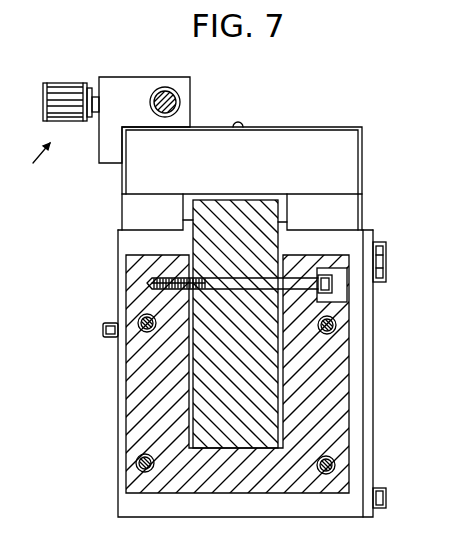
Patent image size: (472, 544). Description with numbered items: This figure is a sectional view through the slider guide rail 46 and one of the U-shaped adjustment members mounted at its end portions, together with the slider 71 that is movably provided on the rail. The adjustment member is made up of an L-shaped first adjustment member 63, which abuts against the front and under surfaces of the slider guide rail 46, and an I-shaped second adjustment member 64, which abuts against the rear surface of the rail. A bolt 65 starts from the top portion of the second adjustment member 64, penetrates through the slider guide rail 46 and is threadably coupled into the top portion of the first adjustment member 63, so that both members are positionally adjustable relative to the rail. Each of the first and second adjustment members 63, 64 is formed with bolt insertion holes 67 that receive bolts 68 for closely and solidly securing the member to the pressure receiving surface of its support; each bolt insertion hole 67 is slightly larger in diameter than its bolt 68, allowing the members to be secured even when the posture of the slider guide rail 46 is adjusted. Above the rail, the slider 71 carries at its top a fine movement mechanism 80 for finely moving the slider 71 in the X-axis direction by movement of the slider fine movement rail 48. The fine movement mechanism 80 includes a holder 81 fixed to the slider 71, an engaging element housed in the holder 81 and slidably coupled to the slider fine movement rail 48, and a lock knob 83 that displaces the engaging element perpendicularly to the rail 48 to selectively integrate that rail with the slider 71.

The slider guide rail 46 is at (267, 235).
The slider fine movement rail 48 is at (163, 92).
The first adjustment member 63 is at (137, 395).
The second adjustment member 64 is at (337, 404).
The bolt 65 is at (300, 280).
The bolt insertion hole 67 is at (142, 316).
The bolt 68 is at (143, 333).
The slider 71 is at (349, 167).
The fine movement mechanism 80 is at (32, 168).
The holder 81 is at (112, 85).
The lock knob 83 is at (63, 90).